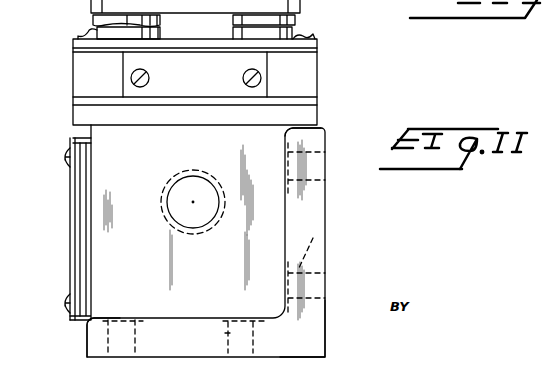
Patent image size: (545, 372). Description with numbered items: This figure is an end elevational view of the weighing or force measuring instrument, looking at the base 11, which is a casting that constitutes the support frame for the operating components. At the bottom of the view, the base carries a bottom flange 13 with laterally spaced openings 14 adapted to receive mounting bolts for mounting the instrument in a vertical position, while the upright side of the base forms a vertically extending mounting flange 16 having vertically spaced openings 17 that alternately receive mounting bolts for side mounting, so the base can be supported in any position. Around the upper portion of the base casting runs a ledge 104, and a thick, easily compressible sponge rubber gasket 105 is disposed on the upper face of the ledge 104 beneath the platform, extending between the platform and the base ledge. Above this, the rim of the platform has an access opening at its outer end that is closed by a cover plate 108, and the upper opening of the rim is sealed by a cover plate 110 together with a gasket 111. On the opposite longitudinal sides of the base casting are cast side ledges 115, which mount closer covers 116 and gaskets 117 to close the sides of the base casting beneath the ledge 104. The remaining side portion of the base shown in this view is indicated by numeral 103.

The base 11 is at (334, 331).
The bottom flange 13 is at (97, 338).
The openings 14 is at (228, 332).
The mounting flange 16 is at (325, 135).
The openings 17 is at (309, 181).
The side frame member 103 is at (212, 229).
The ledge 104 is at (218, 95).
The gasket 105 is at (182, 102).
The cover plate 108 is at (276, 71).
The cover plate 110 is at (298, 38).
The gasket 111 is at (318, 48).
The side ledge 115 is at (92, 152).
The closer cover 116 is at (73, 207).
The gasket 117 is at (82, 245).